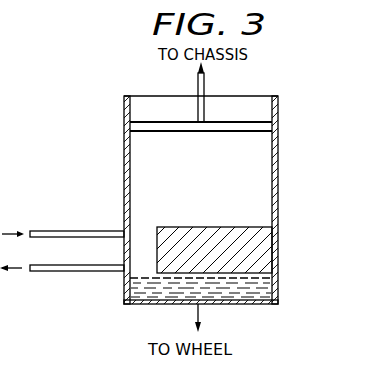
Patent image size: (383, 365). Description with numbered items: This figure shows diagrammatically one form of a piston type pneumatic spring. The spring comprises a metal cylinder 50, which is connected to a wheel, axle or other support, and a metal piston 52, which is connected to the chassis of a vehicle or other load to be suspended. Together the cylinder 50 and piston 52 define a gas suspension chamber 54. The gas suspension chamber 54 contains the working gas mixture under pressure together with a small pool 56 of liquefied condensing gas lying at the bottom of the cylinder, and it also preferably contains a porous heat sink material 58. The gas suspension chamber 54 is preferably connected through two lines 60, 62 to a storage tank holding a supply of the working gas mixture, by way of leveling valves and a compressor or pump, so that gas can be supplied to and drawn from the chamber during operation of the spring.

The metal cylinder 50 is at (278, 174).
The metal piston 52 is at (168, 131).
The gas suspension chamber 54 is at (211, 194).
The pool of liquefied condensing gas 56 is at (233, 292).
The porous heat sink material 58 is at (262, 249).
The line 60 is at (69, 231).
The line 62 is at (70, 271).